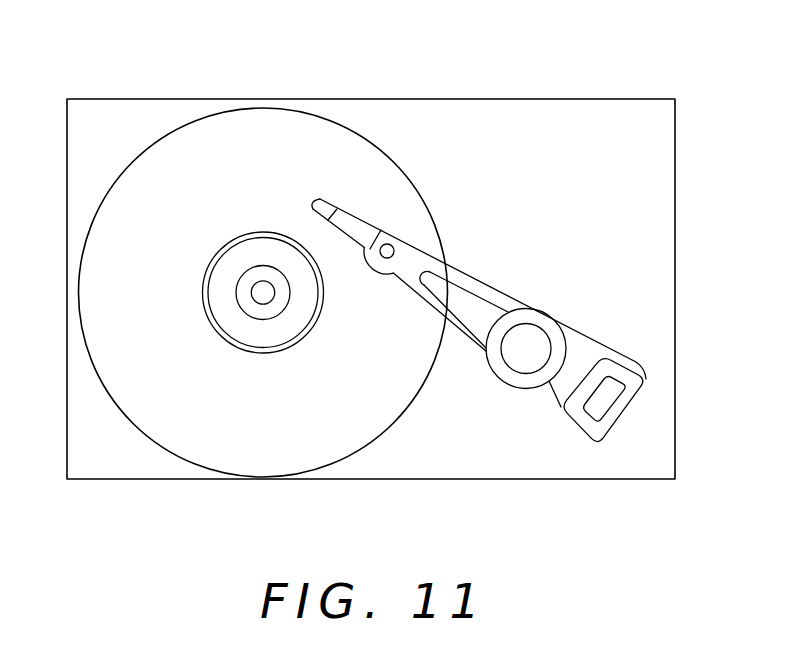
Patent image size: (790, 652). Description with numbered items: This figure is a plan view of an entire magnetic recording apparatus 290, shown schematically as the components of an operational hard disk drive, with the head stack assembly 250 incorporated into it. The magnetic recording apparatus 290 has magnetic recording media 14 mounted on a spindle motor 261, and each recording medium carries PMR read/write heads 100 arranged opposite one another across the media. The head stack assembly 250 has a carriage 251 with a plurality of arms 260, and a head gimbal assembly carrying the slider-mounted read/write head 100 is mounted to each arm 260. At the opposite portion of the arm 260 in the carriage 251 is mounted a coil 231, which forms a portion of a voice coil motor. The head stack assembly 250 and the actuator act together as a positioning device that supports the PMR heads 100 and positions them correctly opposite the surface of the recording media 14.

The magnetic recording apparatus 290 is at (403, 88).
The magnetic recording media 14 is at (197, 464).
The spindle motor 261 is at (263, 304).
The slider-mounted read/write head 100 is at (330, 204).
The carriage 251 is at (538, 311).
The arm 260 is at (472, 341).
The head stack assembly 250 is at (546, 392).
The coil 231 is at (625, 412).